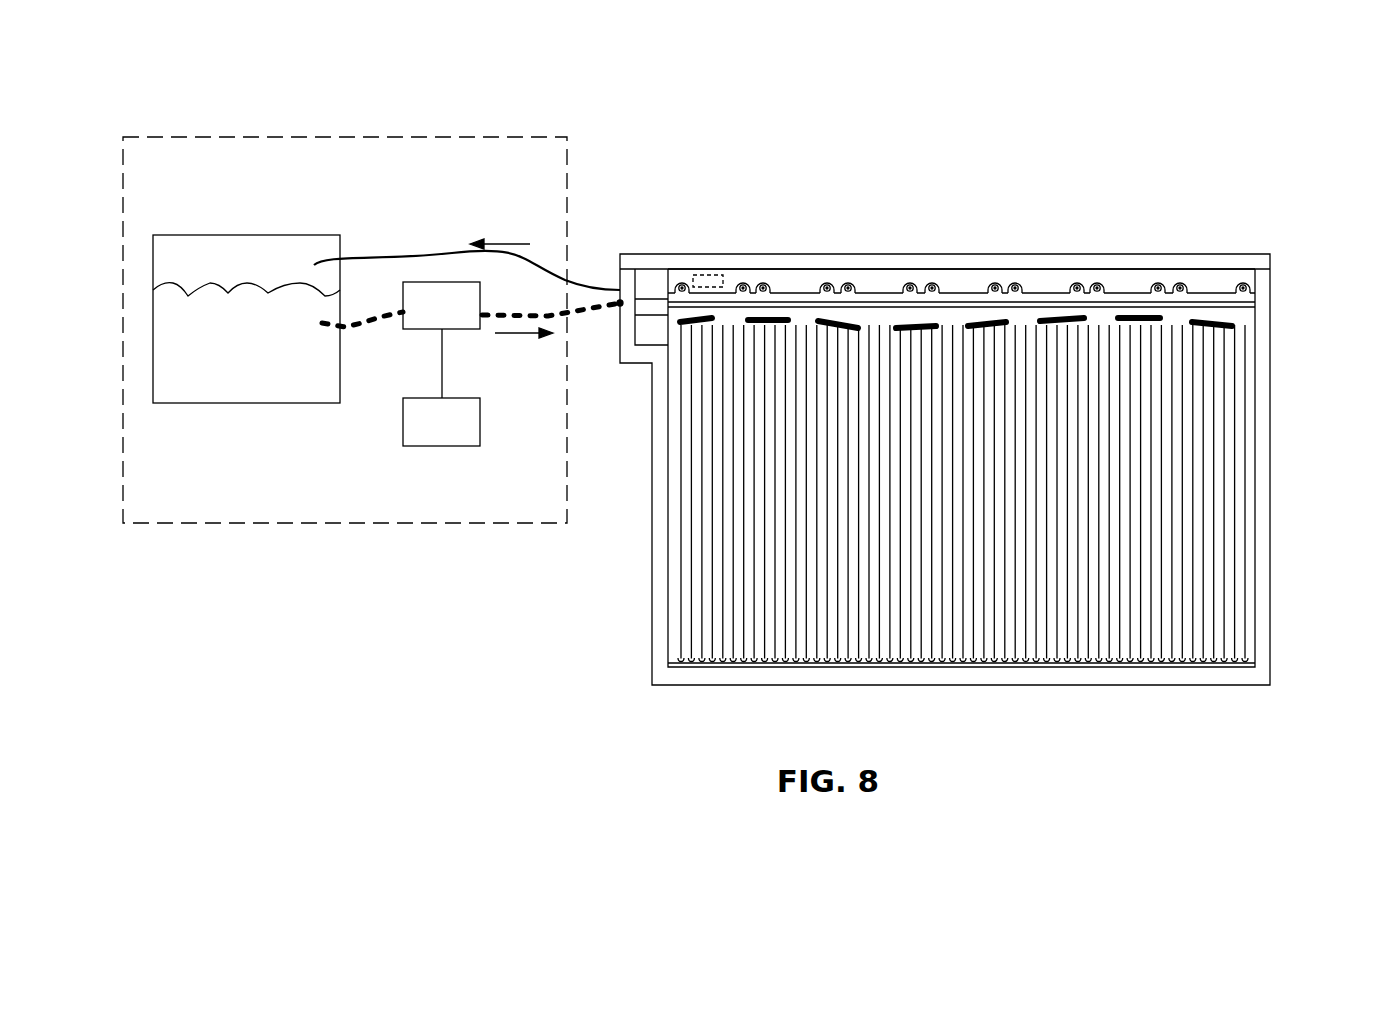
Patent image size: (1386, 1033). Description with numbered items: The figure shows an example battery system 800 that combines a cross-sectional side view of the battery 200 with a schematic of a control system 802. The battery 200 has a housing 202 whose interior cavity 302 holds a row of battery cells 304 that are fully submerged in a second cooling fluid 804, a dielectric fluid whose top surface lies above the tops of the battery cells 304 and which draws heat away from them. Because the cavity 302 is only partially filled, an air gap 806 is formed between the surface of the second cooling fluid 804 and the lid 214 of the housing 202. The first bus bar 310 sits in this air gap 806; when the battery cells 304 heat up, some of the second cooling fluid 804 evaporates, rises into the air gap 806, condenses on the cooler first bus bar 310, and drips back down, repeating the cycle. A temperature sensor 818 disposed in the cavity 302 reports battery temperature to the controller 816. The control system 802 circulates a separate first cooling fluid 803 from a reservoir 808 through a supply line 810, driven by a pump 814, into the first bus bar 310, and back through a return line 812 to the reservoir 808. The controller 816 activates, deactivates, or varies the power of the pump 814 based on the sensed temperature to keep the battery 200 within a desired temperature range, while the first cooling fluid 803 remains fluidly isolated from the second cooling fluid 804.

The battery system 800 is at (283, 60).
The control system 802 is at (319, 136).
The first cooling fluid 803 is at (229, 352).
The reservoir 808 is at (226, 235).
The return line 812 is at (452, 252).
The supply line 810 is at (360, 326).
The pump 814 is at (423, 318).
The controller 816 is at (423, 434).
The battery 200 is at (1181, 157).
The housing 202 is at (1271, 684).
The lid 214 is at (967, 253).
The first bus bar 310 is at (797, 292).
The cavity 302 is at (1118, 266).
The temperature sensor 818 is at (713, 274).
The air gap 806 is at (1230, 278).
The second cooling fluid 804 is at (1215, 323).
The battery cells 304 is at (683, 554).